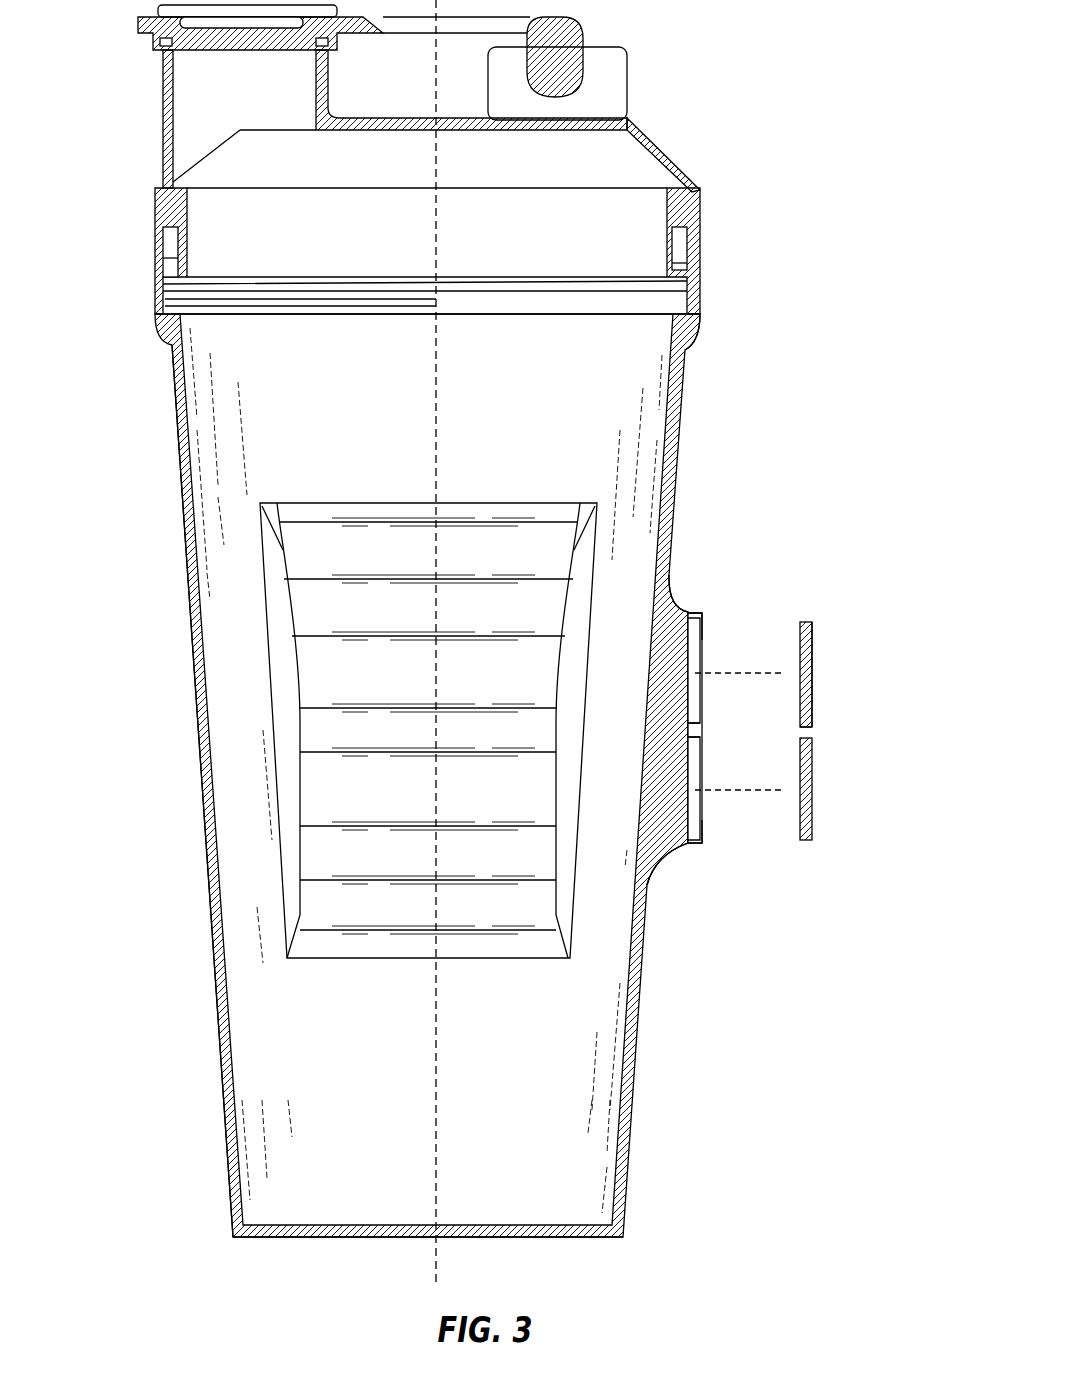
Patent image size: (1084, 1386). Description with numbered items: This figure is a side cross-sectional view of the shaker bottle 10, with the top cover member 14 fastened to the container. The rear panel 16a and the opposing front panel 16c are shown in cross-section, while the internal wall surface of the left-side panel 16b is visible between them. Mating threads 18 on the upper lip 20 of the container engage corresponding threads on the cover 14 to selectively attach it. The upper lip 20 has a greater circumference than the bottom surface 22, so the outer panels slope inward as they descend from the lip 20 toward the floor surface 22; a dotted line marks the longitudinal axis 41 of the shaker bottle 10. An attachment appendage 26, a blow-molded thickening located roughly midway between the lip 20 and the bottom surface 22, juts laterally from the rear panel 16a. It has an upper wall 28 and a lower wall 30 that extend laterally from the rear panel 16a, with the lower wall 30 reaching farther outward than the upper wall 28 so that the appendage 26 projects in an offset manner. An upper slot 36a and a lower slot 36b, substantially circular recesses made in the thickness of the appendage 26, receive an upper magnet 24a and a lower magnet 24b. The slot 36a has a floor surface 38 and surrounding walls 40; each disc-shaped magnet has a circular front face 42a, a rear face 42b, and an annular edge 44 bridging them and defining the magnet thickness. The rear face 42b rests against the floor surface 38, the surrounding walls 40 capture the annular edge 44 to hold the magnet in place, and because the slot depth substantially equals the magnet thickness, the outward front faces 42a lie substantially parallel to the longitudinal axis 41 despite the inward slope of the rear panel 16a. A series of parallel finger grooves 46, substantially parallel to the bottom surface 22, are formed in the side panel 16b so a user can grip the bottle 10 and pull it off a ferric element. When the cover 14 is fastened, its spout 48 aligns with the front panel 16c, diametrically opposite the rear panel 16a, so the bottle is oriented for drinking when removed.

The shaker bottle 10 is at (499, 647).
The top cover member 14 is at (456, 182).
The rear panel 16a is at (683, 362).
The left-side panel 16b is at (520, 408).
The front panel 16c is at (178, 403).
The mating threads 18 is at (672, 285).
The upper lip 20 is at (680, 306).
The bottom surface 22 is at (580, 1236).
The upper magnet 24a is at (822, 624).
The lower magnet 24b is at (822, 828).
The attachment appendage 26 is at (688, 598).
The upper wall 28 is at (690, 612).
The lower wall 30 is at (660, 858).
The upper slot 36a is at (710, 633).
The lower slot 36b is at (708, 832).
The floor surface 38 is at (703, 650).
The surrounding walls 40 is at (695, 725).
The longitudinal axis 41 is at (433, 1172).
The front face 42a is at (812, 690).
The rear face 42b is at (797, 720).
The annular edge 44 is at (812, 658).
The grooves 46 is at (313, 550).
The spout 48 is at (226, 78).